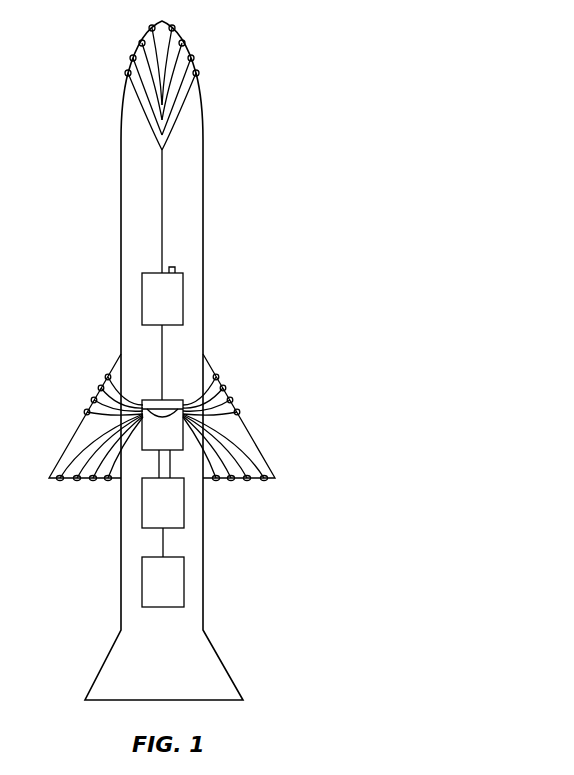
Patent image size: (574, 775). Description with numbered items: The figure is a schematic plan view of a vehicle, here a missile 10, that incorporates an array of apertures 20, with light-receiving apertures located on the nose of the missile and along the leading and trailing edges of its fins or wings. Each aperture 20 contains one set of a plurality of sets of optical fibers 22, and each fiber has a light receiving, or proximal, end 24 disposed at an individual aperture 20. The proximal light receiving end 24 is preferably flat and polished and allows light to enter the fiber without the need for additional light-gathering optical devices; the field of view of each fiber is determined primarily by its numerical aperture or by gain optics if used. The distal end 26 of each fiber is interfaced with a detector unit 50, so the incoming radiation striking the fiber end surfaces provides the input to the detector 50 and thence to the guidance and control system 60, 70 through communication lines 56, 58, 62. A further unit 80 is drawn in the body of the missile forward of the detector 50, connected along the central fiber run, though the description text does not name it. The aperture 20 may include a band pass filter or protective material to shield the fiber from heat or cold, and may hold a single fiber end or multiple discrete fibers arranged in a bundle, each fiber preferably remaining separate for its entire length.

The missile 10 is at (222, 225).
The aperture 20 is at (239, 411).
The optical fibers 22 is at (195, 152).
The proximal light receiving end 24 is at (240, 443).
The distal end 26 is at (205, 350).
The detector unit 50 is at (152, 400).
The communication line 56 is at (158, 461).
The communication line 58 is at (172, 464).
The guidance and control system 60 is at (142, 508).
The communication line 62 is at (165, 545).
The guidance and control system 70 is at (185, 583).
The sensor unit 80 is at (185, 303).